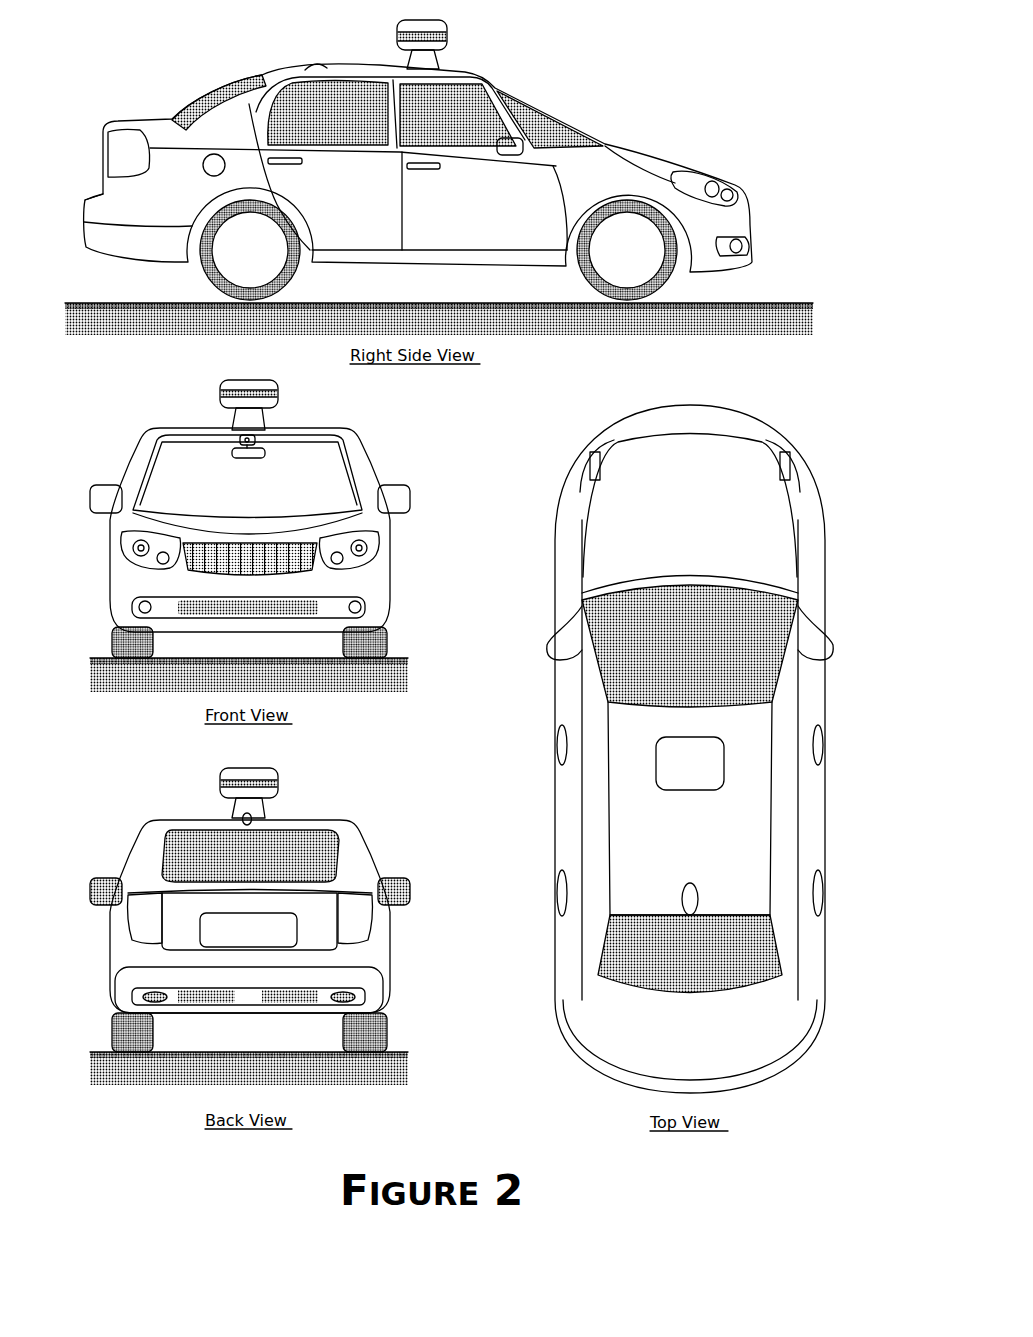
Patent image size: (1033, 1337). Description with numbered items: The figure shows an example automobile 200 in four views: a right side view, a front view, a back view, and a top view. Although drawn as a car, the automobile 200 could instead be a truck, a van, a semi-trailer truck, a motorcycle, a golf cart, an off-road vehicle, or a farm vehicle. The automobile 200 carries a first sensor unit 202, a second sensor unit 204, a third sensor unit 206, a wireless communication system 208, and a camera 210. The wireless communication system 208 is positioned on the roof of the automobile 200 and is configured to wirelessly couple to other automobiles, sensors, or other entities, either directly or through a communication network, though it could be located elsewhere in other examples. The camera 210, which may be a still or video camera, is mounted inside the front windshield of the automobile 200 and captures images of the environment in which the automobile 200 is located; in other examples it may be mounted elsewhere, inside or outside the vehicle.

The automobile 200 is at (78, 112).
The first sensor unit 202 is at (450, 42).
The second sensor unit 204 is at (738, 192).
The third sensor unit 206 is at (753, 244).
The wireless communication system 208 is at (312, 62).
The camera 210 is at (257, 442).